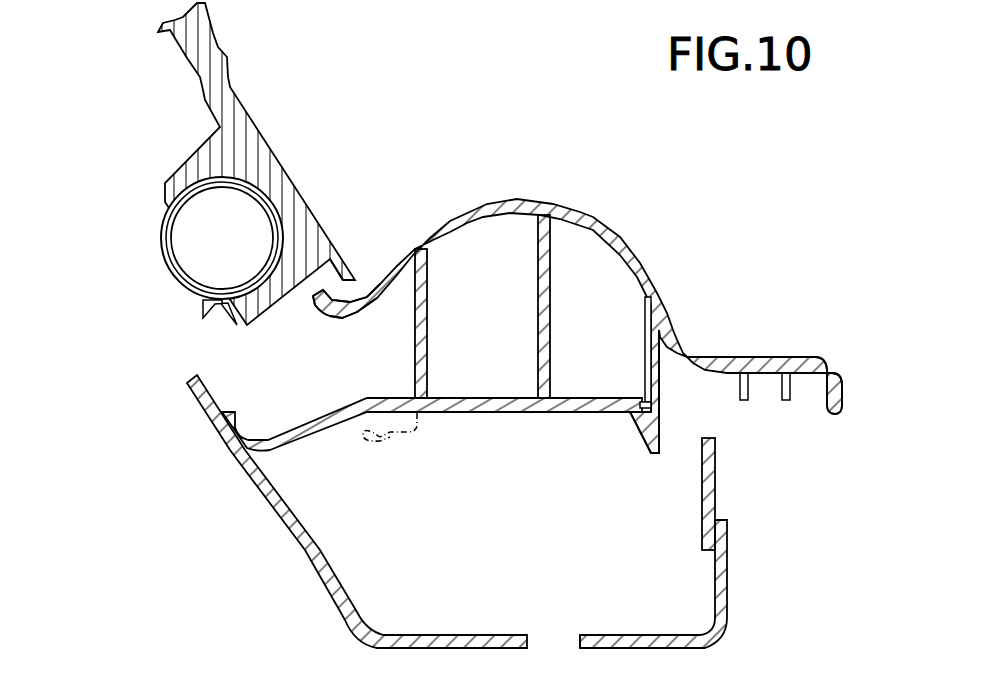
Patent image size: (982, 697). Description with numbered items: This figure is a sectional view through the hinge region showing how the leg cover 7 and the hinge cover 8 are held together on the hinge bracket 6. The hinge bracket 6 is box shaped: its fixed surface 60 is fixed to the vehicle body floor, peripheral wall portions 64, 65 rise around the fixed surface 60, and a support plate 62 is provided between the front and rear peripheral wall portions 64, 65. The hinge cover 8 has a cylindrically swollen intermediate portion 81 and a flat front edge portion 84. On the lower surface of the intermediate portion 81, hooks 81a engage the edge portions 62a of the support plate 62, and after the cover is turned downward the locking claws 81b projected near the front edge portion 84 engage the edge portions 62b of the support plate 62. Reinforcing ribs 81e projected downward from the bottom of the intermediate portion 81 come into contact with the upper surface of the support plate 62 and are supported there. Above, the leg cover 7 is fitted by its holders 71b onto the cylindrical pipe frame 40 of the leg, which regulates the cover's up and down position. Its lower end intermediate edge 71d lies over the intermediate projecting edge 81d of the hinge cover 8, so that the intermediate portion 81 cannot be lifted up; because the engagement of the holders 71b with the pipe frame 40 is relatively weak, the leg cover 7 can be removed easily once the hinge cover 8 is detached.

The leg cover 7 is at (233, 88).
The holders 71b is at (177, 167).
The intermediate edge 71d is at (348, 270).
The pipe frame 40 is at (173, 273).
The hinge cover 8 is at (554, 318).
The intermediate portion 81 is at (547, 200).
The hooks 81a is at (380, 437).
The locking claws 81b is at (637, 440).
The intermediate projecting edge 81d is at (313, 297).
The reinforcing ribs 81e is at (540, 325).
The front edge portion 84 is at (773, 353).
The support plate 62 is at (493, 413).
The edge portions 62a is at (395, 398).
The edge portions 62b is at (640, 390).
The peripheral wall portion 65 is at (262, 487).
The hinge bracket 6 is at (712, 599).
The fixed surface 60 is at (653, 648).
The peripheral wall portion 64 is at (727, 543).